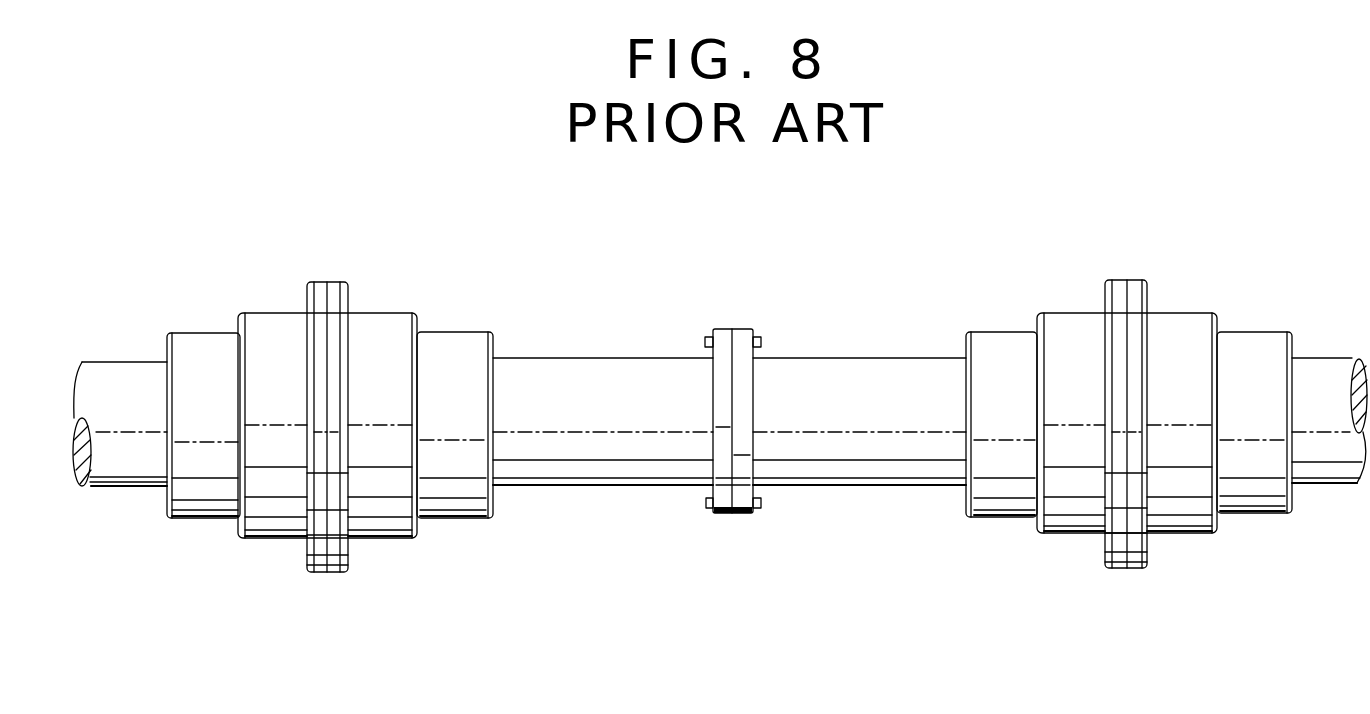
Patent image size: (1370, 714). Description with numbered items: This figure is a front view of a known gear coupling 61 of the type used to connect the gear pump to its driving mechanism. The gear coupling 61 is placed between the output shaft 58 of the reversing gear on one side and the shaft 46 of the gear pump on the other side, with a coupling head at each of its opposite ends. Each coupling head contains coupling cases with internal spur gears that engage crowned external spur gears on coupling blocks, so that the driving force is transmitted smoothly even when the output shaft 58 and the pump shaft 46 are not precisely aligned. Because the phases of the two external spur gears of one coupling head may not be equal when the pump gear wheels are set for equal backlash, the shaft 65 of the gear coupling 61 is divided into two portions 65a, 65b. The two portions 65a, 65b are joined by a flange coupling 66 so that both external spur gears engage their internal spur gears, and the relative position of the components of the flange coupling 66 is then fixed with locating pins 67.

The shaft 46 is at (1327, 484).
The output shaft 58 is at (127, 362).
The gear coupling 61 is at (633, 357).
The shaft 65 is at (729, 573).
The portion 65a is at (670, 487).
The portion 65b is at (803, 487).
The flange coupling 66 is at (740, 329).
The locating pins 67 is at (762, 342).